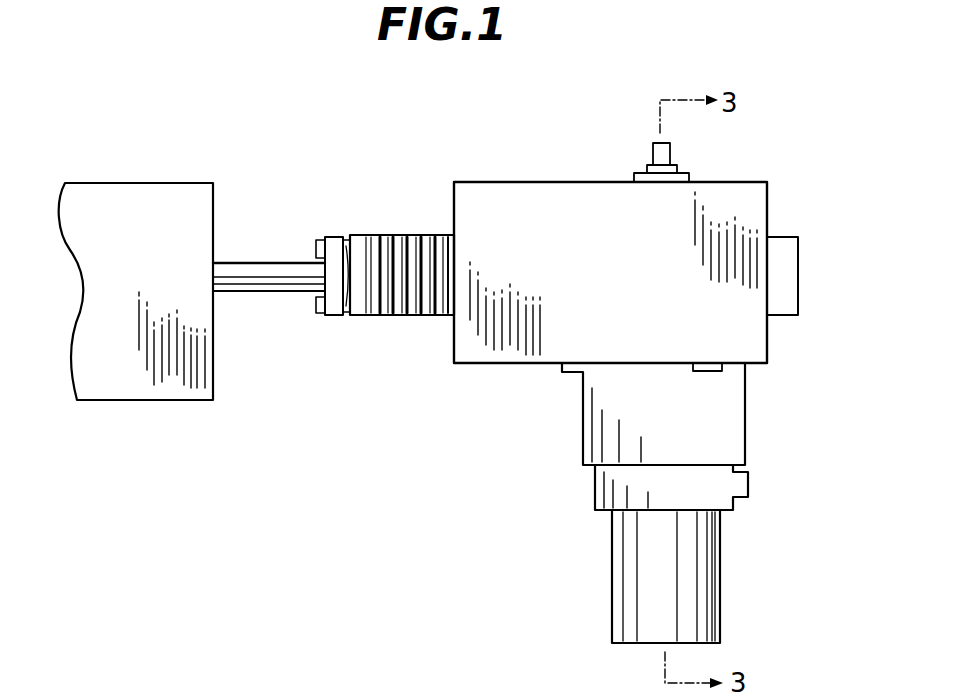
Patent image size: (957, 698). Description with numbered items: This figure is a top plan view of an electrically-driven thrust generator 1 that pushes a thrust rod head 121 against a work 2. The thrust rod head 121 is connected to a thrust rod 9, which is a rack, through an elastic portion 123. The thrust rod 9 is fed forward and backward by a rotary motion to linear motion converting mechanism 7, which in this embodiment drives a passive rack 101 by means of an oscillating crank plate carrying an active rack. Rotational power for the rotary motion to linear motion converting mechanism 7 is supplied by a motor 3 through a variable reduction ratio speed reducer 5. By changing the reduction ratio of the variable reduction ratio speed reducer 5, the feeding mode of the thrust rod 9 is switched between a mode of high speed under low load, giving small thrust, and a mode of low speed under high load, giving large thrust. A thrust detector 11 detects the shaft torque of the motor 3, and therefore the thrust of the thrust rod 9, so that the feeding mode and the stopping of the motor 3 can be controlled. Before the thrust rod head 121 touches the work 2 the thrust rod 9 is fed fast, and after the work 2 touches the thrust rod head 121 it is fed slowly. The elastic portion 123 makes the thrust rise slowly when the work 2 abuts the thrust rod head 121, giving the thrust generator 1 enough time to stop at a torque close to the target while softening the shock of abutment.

The electrically-driven thrust generator 1 is at (450, 156).
The work 2 is at (108, 382).
The motor 3 is at (727, 579).
The variable reduction ratio speed reducer 5 is at (757, 421).
The rotary motion to linear motion converting mechanism 7 is at (764, 176).
The thrust rod 9 is at (398, 234).
The thrust detector 11 is at (757, 484).
The passive rack 101 is at (390, 317).
The thrust rod head 121 is at (277, 260).
The elastic portion 123 is at (336, 234).